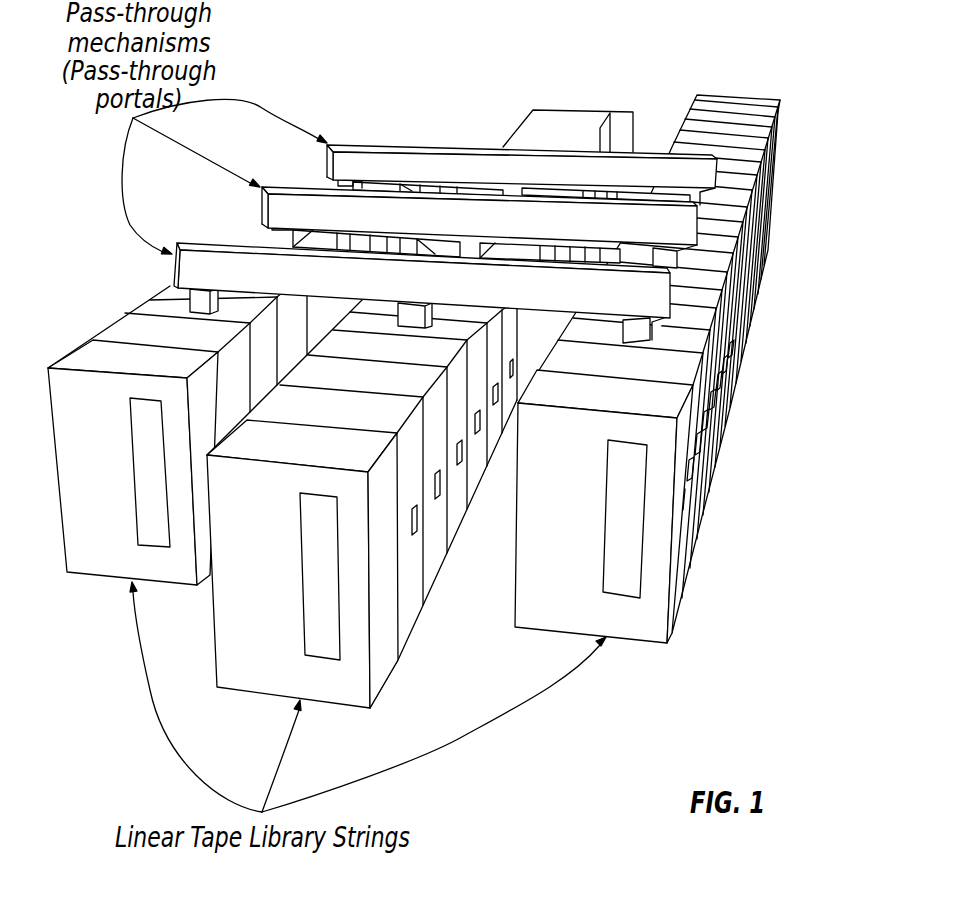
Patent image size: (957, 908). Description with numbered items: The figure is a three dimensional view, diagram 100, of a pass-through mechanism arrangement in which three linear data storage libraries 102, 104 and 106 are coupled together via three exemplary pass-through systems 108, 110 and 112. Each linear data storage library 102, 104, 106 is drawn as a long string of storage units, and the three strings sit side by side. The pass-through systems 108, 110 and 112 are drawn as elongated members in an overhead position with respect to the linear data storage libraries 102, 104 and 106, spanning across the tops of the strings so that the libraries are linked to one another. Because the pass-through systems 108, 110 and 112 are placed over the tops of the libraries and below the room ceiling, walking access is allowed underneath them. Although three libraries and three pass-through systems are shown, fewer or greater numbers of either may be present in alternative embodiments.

The diagram 100 is at (641, 47).
The linear data storage library 102 is at (88, 578).
The linear data storage library 104 is at (249, 697).
The linear data storage library 106 is at (550, 633).
The pass-through system 108 is at (355, 142).
The pass-through system 110 is at (283, 186).
The pass-through system 112 is at (197, 247).